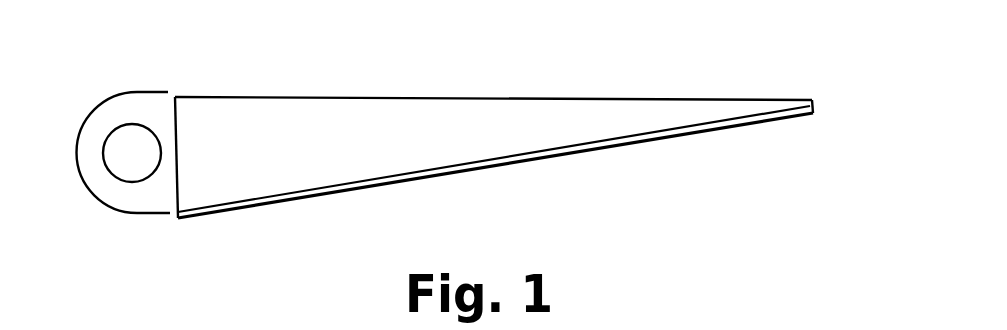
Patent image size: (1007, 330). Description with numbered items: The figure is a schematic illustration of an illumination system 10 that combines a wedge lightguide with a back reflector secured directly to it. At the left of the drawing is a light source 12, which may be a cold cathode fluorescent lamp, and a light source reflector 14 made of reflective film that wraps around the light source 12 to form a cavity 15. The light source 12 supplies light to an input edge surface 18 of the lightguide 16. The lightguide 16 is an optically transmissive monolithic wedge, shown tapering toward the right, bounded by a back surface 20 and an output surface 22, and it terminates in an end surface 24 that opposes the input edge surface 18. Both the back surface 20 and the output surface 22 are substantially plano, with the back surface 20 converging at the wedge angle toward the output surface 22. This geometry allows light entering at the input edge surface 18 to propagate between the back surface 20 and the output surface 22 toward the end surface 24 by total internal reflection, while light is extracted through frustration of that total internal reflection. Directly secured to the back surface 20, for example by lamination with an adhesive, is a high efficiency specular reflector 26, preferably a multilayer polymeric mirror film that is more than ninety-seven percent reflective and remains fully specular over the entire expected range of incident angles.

The illumination system 10 is at (630, 58).
The light source 12 is at (135, 124).
The light source reflector 14 is at (99, 102).
The cavity 15 is at (113, 193).
The lightguide 16 is at (414, 86).
The input edge surface 18 is at (176, 192).
The back surface 20 is at (353, 181).
The output surface 22 is at (278, 96).
The end surface 24 is at (813, 100).
The specular reflector 26 is at (552, 161).